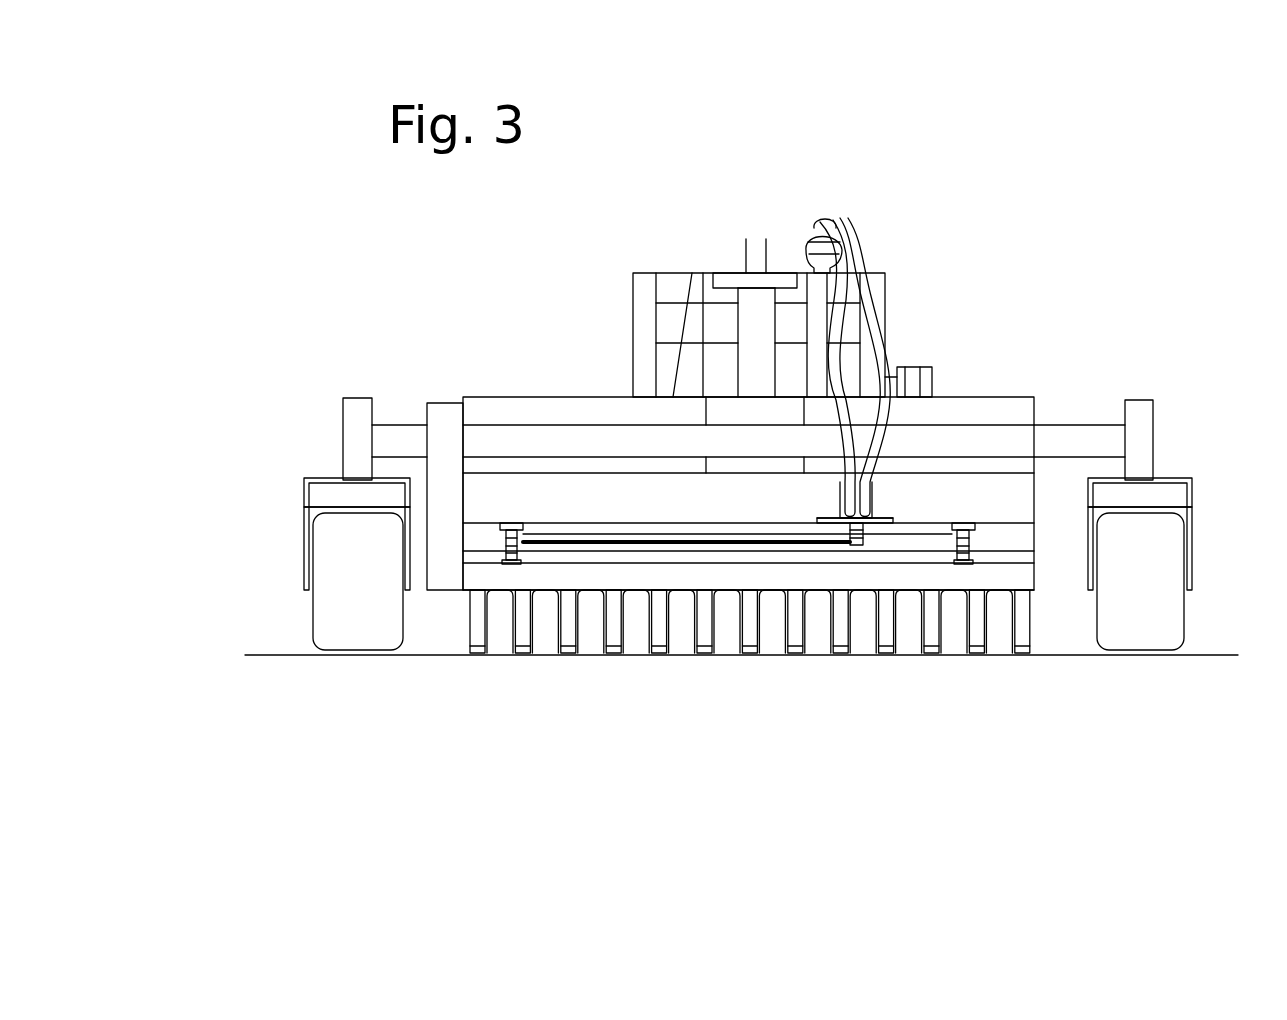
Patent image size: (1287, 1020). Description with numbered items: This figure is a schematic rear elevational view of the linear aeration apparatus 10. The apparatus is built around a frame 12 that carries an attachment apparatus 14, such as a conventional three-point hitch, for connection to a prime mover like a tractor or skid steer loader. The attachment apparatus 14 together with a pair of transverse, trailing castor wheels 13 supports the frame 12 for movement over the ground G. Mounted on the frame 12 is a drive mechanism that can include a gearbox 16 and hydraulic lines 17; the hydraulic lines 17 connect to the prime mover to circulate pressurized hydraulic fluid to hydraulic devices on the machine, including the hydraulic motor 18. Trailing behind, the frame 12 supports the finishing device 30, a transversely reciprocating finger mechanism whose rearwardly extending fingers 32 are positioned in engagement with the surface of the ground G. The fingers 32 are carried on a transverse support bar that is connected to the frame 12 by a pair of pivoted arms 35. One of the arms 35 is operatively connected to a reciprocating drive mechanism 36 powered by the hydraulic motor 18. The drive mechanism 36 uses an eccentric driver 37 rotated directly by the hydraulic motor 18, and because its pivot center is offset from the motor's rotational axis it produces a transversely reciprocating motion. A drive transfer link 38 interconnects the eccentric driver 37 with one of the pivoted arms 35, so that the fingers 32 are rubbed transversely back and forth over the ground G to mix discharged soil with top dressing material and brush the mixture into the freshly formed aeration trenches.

The linear aeration apparatus 10 is at (1008, 226).
The frame 12 is at (885, 322).
The castor wheels 13 is at (315, 612).
The attachment apparatus 14 is at (746, 252).
The gearbox 16 is at (740, 328).
The hydraulic lines 17 is at (820, 222).
The hydraulic motor 18 is at (880, 503).
The finishing device 30 is at (481, 691).
The fingers 32 is at (540, 640).
The pivoted arms 35 is at (500, 535).
The reciprocating drive mechanism 36 is at (810, 507).
The eccentric driver 37 is at (863, 532).
The drive transfer link 38 is at (625, 523).
The ground G is at (1207, 655).